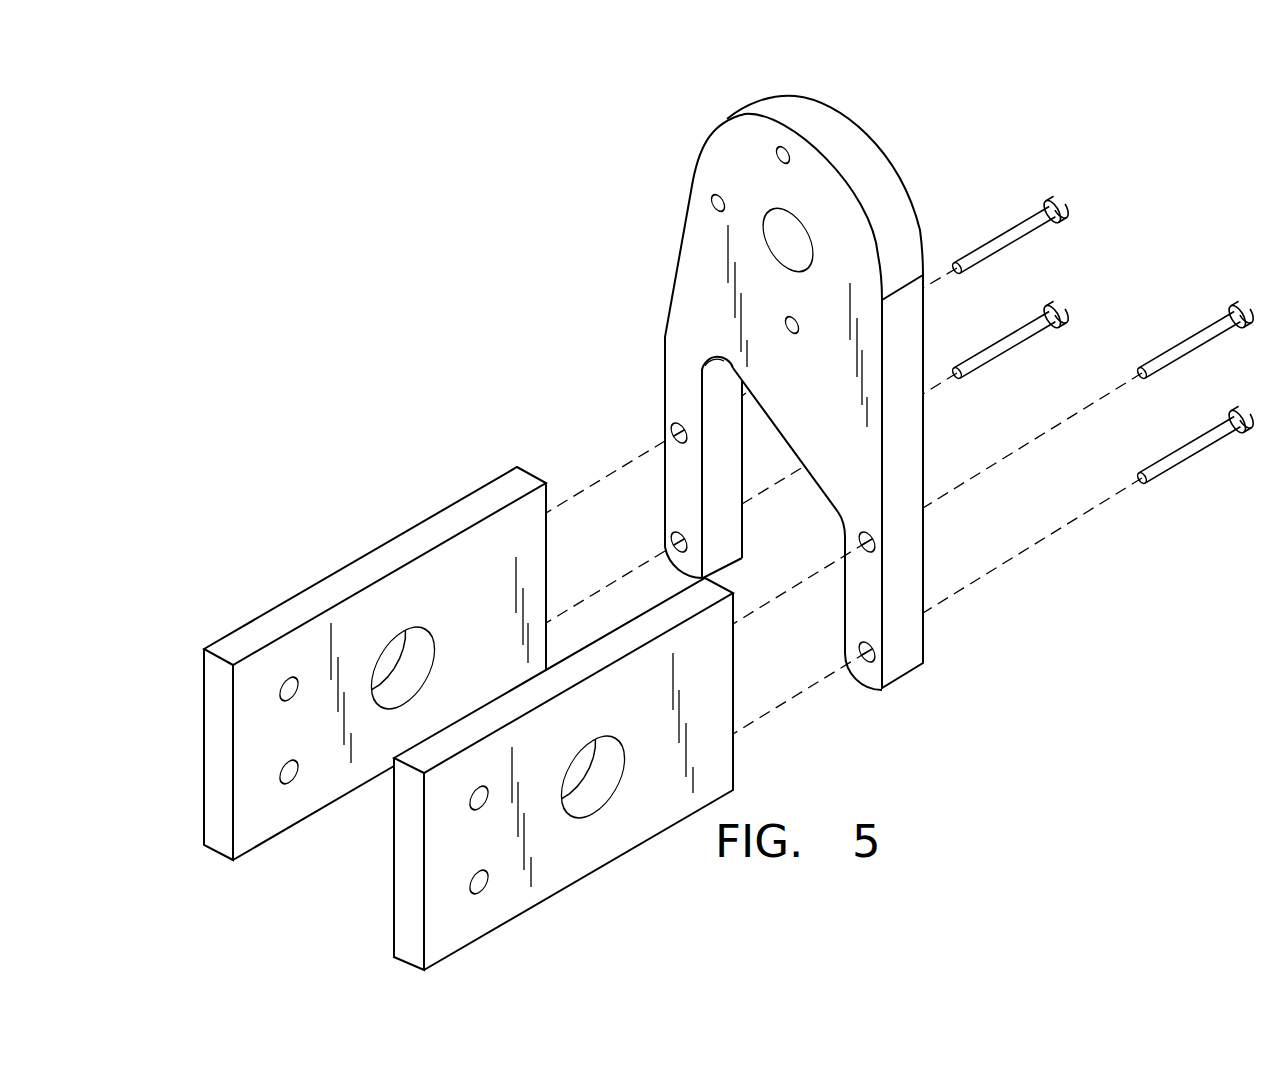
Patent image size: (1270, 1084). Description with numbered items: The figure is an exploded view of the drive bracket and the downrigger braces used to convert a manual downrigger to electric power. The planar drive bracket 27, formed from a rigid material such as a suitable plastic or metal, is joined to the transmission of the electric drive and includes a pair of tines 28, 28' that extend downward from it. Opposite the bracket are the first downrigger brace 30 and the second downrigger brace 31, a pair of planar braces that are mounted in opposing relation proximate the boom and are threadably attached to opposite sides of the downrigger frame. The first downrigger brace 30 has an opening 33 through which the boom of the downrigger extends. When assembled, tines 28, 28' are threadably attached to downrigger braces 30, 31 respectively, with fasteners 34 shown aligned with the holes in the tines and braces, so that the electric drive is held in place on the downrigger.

The drive bracket 27 is at (732, 150).
The tine 28 is at (658, 467).
The tine 28' is at (924, 530).
The first downrigger brace 30 is at (388, 535).
The second downrigger brace 31 is at (402, 888).
The opening 33 is at (440, 632).
The bolts 34 is at (1022, 225).